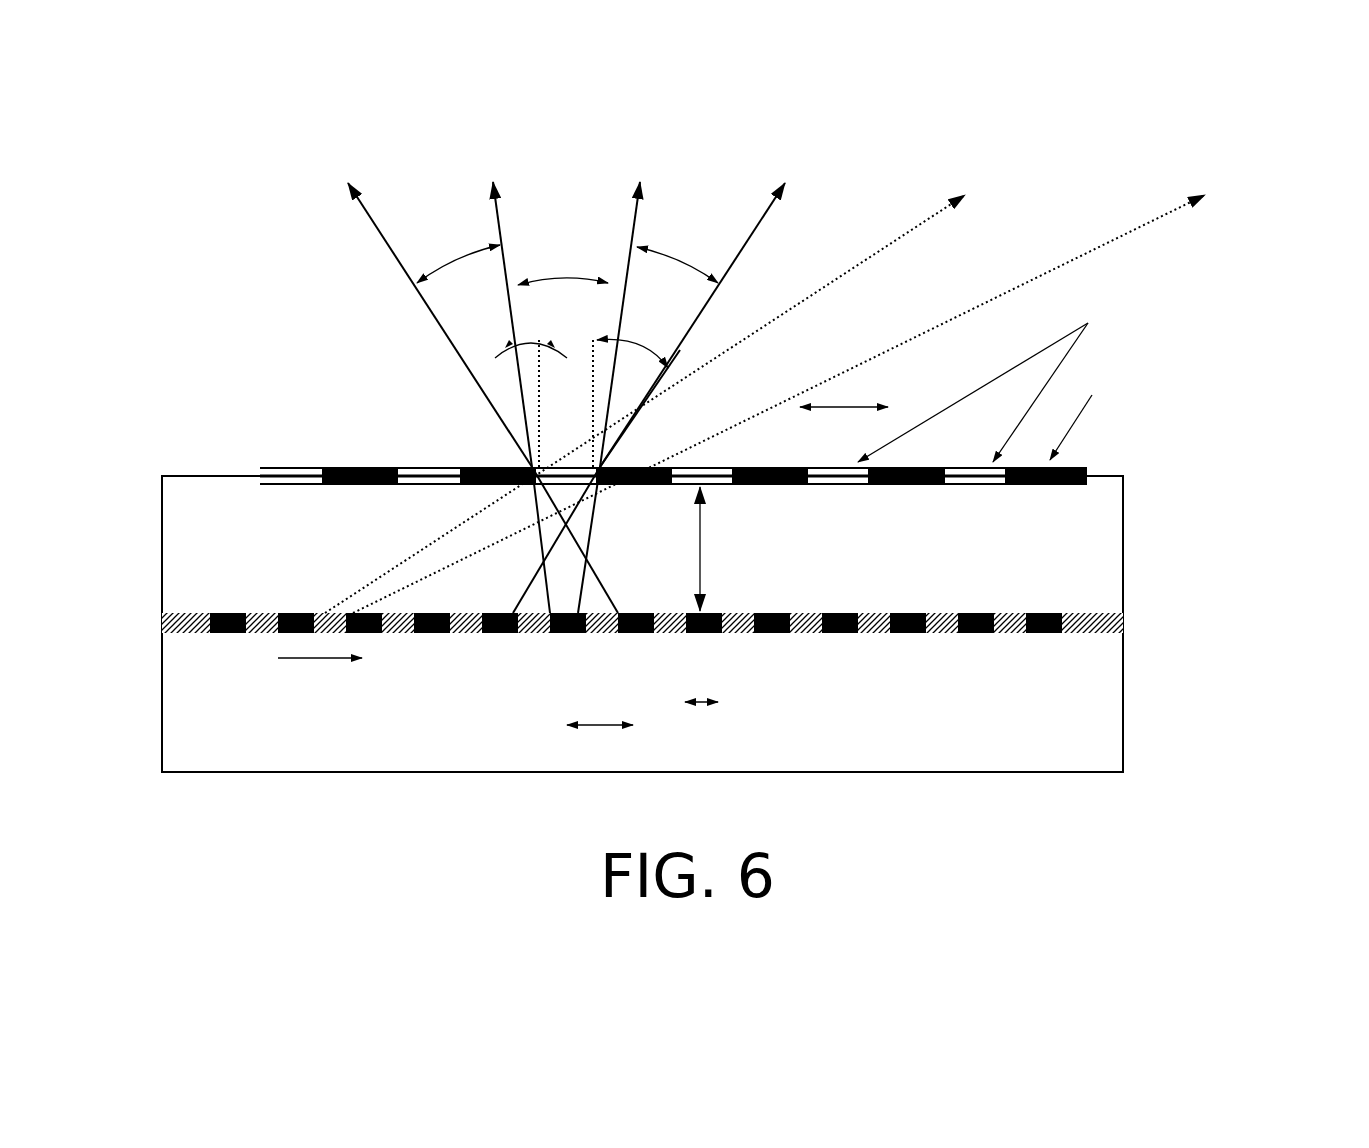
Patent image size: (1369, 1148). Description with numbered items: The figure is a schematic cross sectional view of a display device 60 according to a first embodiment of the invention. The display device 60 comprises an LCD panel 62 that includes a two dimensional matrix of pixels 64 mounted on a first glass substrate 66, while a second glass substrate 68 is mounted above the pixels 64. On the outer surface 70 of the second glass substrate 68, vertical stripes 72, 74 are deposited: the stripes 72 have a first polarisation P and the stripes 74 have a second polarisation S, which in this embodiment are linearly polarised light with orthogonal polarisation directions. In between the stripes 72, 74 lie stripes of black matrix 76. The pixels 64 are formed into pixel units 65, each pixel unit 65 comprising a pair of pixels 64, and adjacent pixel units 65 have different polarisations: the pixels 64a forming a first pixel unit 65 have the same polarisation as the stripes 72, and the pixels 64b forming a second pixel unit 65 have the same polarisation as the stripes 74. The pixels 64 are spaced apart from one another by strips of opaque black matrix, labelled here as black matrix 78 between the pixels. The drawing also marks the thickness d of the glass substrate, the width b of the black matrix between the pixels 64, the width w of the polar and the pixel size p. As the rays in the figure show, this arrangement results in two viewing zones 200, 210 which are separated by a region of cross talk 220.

The display device 60 is at (200, 246).
The LCD panel 62 is at (140, 578).
The pixels 64 is at (162, 625).
The pixels forming a first pixel unit 64a is at (255, 611).
The pixels forming a second pixel unit 64b is at (387, 634).
The pixel unit 65 is at (892, 638).
The first glass substrate 66 is at (178, 735).
The second glass substrate 68 is at (178, 517).
The outer surface 70 is at (190, 468).
The stripes 72 is at (270, 466).
The stripes 74 is at (410, 466).
The stripes of black matrix 76 is at (358, 466).
The black matrix between pixels 78 is at (908, 634).
The viewing zone 200 is at (458, 252).
The viewing zone 210 is at (678, 252).
The region of cross talk 220 is at (563, 265).